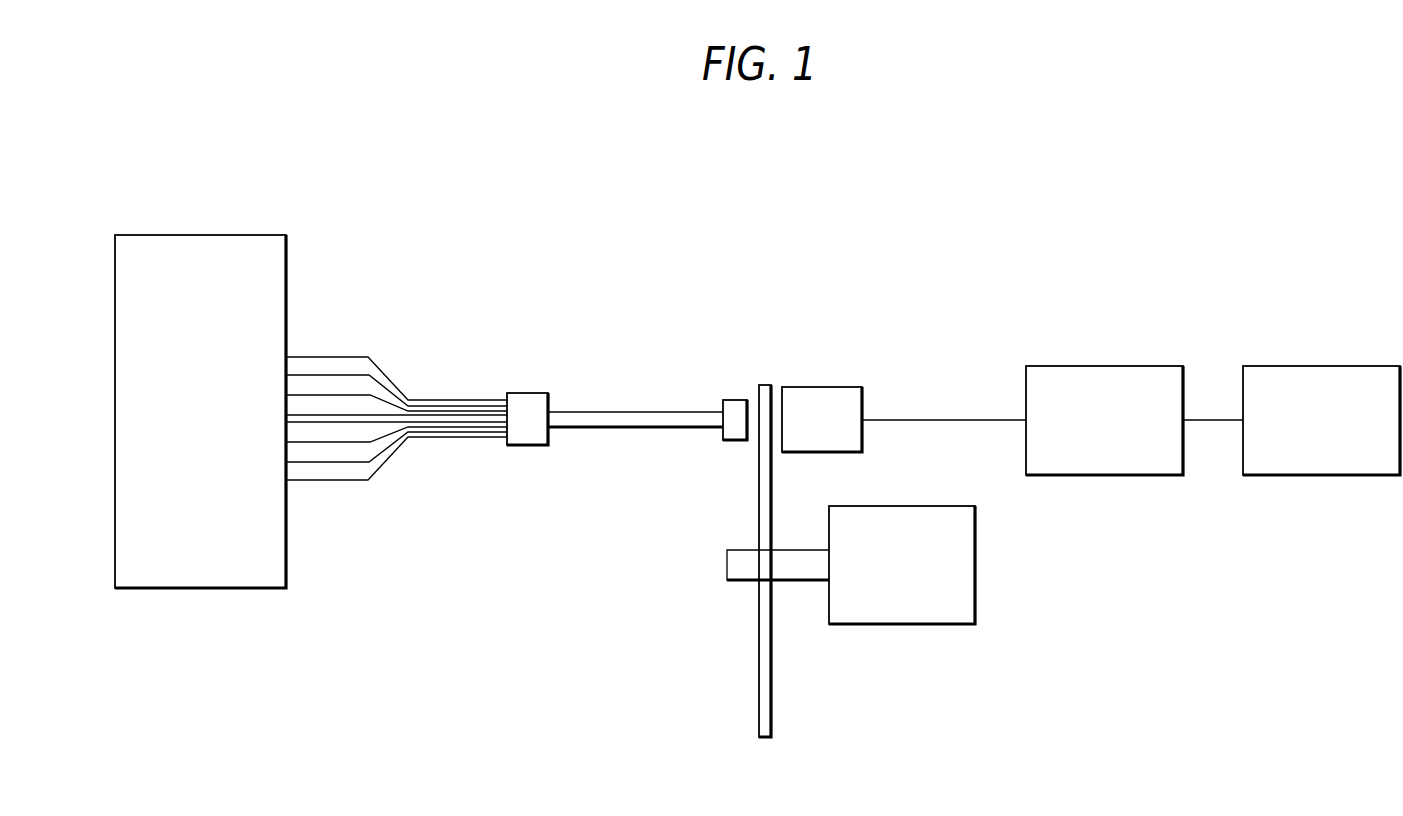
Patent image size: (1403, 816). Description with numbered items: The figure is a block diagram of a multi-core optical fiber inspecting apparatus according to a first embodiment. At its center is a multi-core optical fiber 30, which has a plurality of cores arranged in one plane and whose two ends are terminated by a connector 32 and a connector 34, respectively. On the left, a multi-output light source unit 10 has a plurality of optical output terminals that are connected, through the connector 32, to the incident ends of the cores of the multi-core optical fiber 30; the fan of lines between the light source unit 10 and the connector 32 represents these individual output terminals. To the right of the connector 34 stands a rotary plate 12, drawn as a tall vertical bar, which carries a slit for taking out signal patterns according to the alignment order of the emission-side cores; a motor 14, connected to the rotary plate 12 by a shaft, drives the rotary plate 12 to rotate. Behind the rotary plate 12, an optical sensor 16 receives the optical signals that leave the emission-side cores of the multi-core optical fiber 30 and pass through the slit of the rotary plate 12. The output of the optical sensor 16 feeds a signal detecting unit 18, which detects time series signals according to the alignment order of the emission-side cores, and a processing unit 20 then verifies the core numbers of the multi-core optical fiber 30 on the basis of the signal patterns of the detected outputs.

The multi-output light source unit 10 is at (197, 235).
The rotary plate 12 is at (772, 703).
The motor 14 is at (976, 563).
The optical sensor 16 is at (820, 387).
The signal detecting unit 18 is at (1104, 366).
The processing unit 20 is at (1320, 366).
The multi-core optical fiber 30 is at (610, 412).
The connector 32 is at (527, 393).
The connector 34 is at (736, 400).